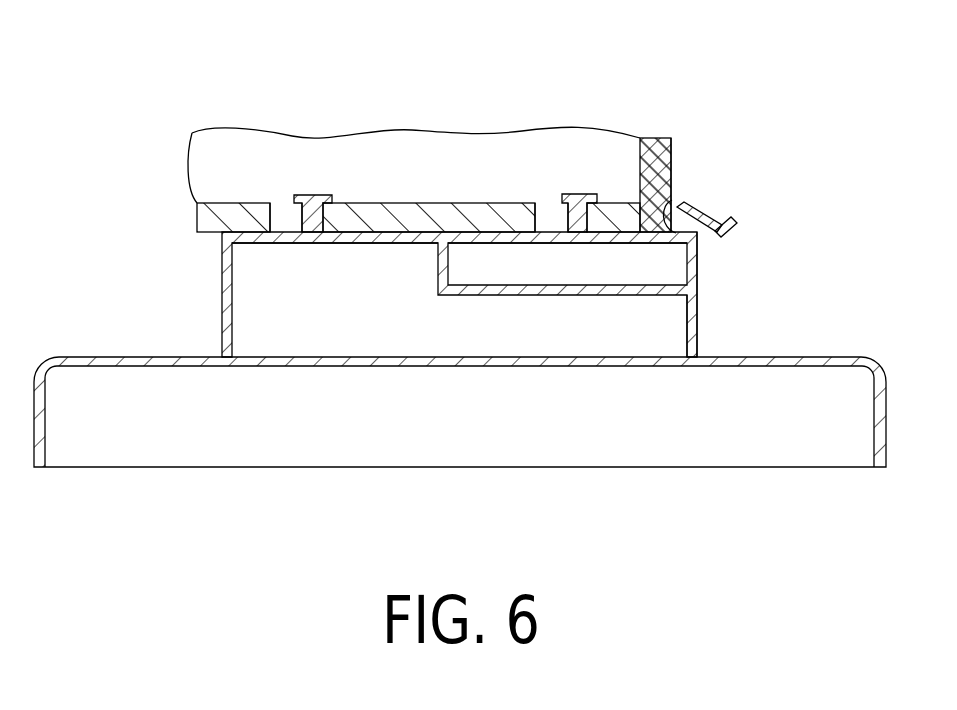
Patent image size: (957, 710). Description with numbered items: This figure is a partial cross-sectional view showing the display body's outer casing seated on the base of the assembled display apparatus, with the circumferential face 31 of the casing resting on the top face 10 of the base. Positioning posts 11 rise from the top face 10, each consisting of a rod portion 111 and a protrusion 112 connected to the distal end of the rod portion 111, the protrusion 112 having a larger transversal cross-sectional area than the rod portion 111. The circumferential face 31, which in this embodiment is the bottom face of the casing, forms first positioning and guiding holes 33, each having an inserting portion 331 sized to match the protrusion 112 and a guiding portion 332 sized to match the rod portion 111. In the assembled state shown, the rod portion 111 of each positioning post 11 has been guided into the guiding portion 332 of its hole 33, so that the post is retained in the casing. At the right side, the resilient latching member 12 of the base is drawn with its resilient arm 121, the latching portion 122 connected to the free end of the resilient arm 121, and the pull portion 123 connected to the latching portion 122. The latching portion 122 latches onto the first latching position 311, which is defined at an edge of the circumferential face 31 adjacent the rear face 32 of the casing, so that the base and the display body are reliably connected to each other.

The top face 10 is at (255, 240).
The positioning post 11 is at (570, 123).
The rod portion 111 is at (548, 206).
The protrusion 112 is at (578, 206).
The resilient latching member 12 is at (567, 279).
The resilient arm 121 is at (680, 242).
The latching portion 122 is at (683, 236).
The pull portion 123 is at (727, 230).
The circumferential face 31 is at (633, 206).
The rear face 32 is at (672, 167).
The first latching position 311 is at (677, 200).
The first positioning and guiding hole 33 is at (278, 394).
The inserting portion 331 is at (273, 232).
The guiding portion 332 is at (305, 232).